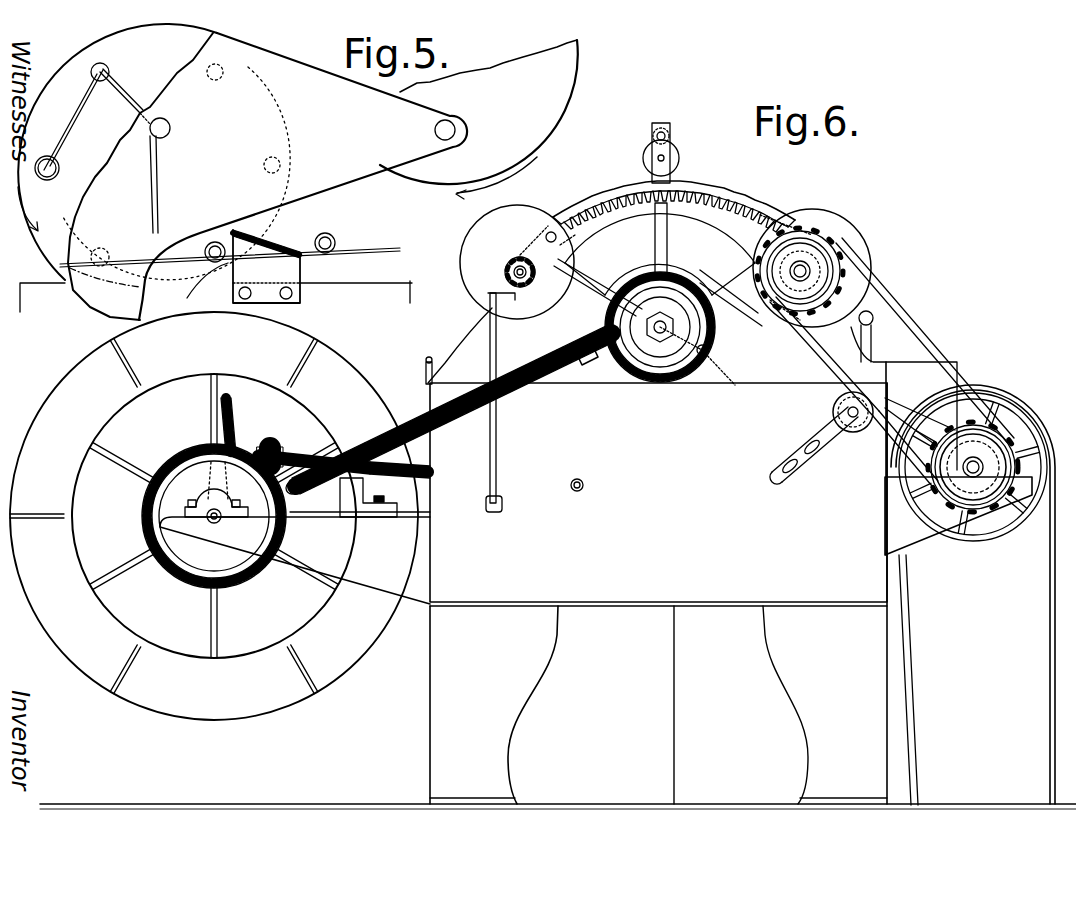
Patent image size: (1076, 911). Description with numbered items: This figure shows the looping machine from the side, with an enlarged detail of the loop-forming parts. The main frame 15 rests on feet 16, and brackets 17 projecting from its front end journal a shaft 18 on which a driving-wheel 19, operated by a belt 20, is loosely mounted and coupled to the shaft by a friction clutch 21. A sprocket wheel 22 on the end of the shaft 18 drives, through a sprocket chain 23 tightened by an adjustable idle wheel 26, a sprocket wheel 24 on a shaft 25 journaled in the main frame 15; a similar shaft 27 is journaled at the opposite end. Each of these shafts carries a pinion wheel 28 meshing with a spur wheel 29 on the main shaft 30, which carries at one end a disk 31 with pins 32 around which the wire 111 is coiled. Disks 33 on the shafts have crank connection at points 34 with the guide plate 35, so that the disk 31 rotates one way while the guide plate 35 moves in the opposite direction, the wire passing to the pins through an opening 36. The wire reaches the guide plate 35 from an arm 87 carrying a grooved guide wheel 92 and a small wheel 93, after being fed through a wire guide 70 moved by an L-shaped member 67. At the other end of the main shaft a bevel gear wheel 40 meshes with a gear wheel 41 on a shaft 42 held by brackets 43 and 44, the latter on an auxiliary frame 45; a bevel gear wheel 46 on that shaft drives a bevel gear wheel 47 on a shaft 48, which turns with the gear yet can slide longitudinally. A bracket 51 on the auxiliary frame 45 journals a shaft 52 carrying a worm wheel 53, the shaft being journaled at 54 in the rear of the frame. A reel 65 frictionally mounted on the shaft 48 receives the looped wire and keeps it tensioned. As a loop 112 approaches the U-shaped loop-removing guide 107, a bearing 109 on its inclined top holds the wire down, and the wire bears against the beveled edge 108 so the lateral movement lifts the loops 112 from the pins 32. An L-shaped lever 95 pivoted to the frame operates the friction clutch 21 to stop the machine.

In FIG. 6, the main frame 15 is at (656, 481).
In FIG. 6, the feet 16 is at (658, 593).
In FIG. 6, the brackets 17 is at (958, 458).
In FIG. 6, the shaft 18 is at (980, 460).
In FIG. 6, the driving-wheel 19 is at (1003, 530).
In FIG. 6, the belt 20 is at (910, 640).
In FIG. 6, the friction clutch 21 is at (1000, 428).
In FIG. 6, the sprocket wheel 22 is at (971, 480).
In FIG. 6, the sprocket chain 23 is at (925, 323).
In FIG. 6, the sprocket wheel 24 is at (820, 255).
In FIG. 6, the shaft 25 is at (803, 268).
In FIG. 6, the adjustable idle wheel 26 is at (847, 412).
In FIG. 6, the shaft 27 is at (470, 290).
In FIG. 6, the pinion wheel 28 is at (505, 272).
In FIG. 6, the spur wheel 29 is at (668, 215).
In FIG. 6, the main shaft 30 is at (663, 325).
In FIG. 5, the disk 31 is at (92, 124).
In FIG. 6, the disk 31 is at (635, 290).
In FIG. 5, the pins 32 is at (109, 72).
In FIG. 5, the disks 33 is at (298, 172).
In FIG. 6, the disks 33 is at (866, 258).
In FIG. 5, the crank connection points 34 is at (435, 130).
In FIG. 5, the guide plate 35 is at (176, 175).
In FIG. 6, the guide plate 35 is at (775, 195).
In FIG. 5, the opening 36 is at (170, 128).
In FIG. 6, the bevel gear wheel 40 is at (706, 354).
In FIG. 6, the gear wheel 41 is at (604, 350).
In FIG. 6, the shaft 42 is at (525, 395).
In FIG. 6, the bracket 43 is at (580, 345).
In FIG. 6, the bracket 44 is at (356, 500).
In FIG. 6, the auxiliary frame 45 is at (295, 558).
In FIG. 6, the bevel gear wheel 46 is at (292, 494).
In FIG. 6, the bevel gear wheel 47 is at (214, 516).
In FIG. 6, the shaft 48 is at (221, 516).
In FIG. 6, the bracket 51 is at (272, 448).
In FIG. 6, the shaft 52 is at (306, 458).
In FIG. 6, the worm wheel 53 is at (232, 398).
In FIG. 6, the journal 54 is at (432, 470).
In FIG. 6, the reel 65 is at (214, 516).
In FIG. 6, the L-shaped member 67 is at (497, 430).
In FIG. 6, the wire guide 70 is at (503, 300).
In FIG. 6, the arm 87 is at (645, 162).
In FIG. 6, the grooved guide wheel 92 is at (670, 157).
In FIG. 6, the small wheel 93 is at (653, 136).
In FIG. 6, the L-shaped lever 95 is at (870, 312).
In FIG. 5, the loop-removing guide 107 is at (285, 265).
In FIG. 5, the beveled edge 108 is at (205, 270).
In FIG. 5, the bearing 109 is at (290, 252).
In FIG. 5, the wire 111 is at (151, 178).
In FIG. 5, the loops 112 is at (210, 244).